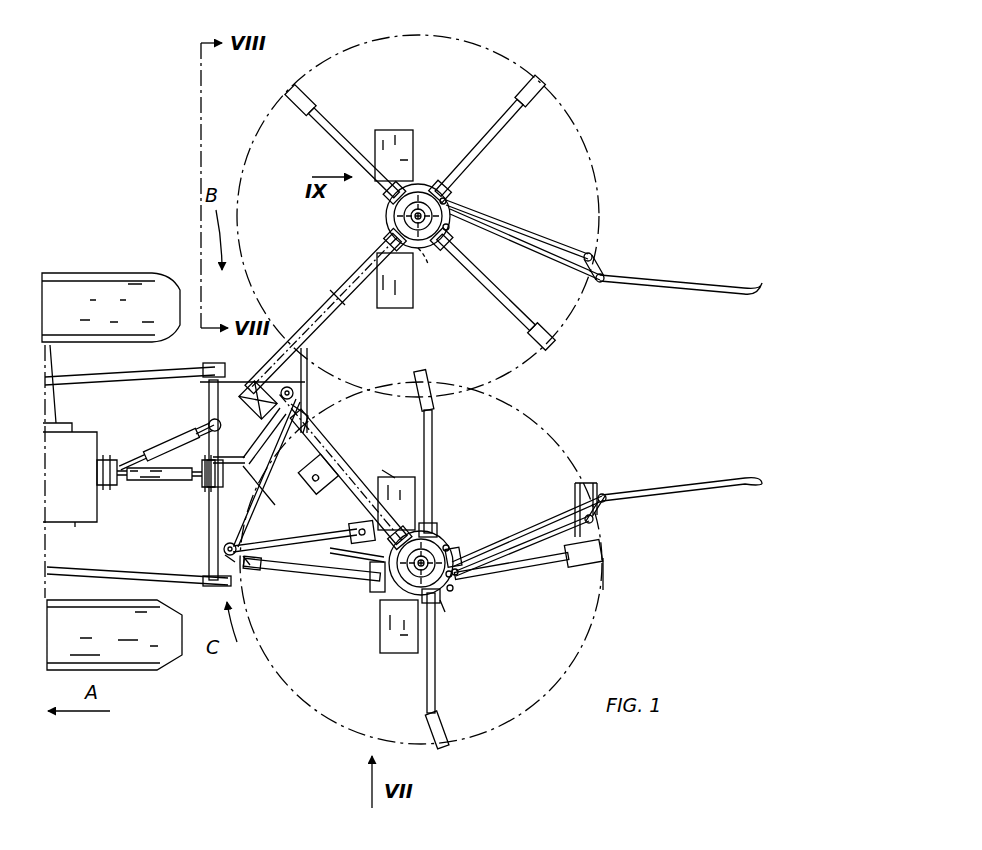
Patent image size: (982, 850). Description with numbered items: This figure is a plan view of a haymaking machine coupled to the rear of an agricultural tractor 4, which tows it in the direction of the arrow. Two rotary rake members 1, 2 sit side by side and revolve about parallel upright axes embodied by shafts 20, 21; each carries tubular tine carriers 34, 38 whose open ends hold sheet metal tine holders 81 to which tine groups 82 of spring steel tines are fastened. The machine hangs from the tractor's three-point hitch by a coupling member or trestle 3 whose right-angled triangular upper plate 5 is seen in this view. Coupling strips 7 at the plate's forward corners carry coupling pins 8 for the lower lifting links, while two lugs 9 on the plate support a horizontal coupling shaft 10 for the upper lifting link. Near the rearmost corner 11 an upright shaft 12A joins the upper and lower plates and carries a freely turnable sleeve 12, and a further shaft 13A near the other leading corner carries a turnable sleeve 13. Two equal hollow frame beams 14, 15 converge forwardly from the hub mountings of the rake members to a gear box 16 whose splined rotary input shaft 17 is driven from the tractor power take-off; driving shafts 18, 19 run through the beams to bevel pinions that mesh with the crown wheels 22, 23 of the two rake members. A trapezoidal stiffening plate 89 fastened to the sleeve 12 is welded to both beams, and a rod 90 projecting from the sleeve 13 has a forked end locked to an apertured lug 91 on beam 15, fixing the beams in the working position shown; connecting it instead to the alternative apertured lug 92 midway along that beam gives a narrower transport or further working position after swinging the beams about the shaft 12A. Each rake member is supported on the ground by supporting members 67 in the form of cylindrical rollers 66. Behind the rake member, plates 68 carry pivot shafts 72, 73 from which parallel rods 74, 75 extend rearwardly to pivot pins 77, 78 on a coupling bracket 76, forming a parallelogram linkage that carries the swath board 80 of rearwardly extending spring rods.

The rake member 1 is at (497, 46).
The rake member 2 is at (313, 713).
The coupling member or trestle 3 is at (205, 518).
The agricultural tractor 4 is at (86, 270).
The upper plate 5 is at (277, 478).
The coupling strips 7 is at (225, 378).
The coupling pins 8 is at (205, 366).
The lugs 9 is at (242, 462).
The coupling shaft 10 is at (205, 487).
The rearmost corner 11 is at (310, 380).
The sleeve 12 is at (306, 393).
The shaft 12A is at (298, 358).
The sleeve 13 is at (224, 548).
The further shaft 13A is at (230, 553).
The hollow frame beam 14 is at (352, 266).
The hollow frame beam 15 is at (358, 472).
The gear box 16 is at (208, 400).
The rotary input shaft 17 is at (208, 418).
The driving shaft 18 is at (342, 280).
The driving shaft 19 is at (384, 476).
The shaft 20 is at (388, 214).
The shaft 21 is at (440, 560).
The crown wheel or bevel pinion 22 is at (428, 250).
The crown wheel or bevel pinion 23 is at (378, 584).
The tubular tine carrier 34 is at (343, 142).
The tubular tine carrier 38 is at (500, 120).
The cylindrical roller 66 is at (405, 158).
The supporting member 67 is at (386, 129).
The upper plate 68 is at (452, 591).
The pivot shaft 72 is at (454, 616).
The pivot shaft 73 is at (458, 572).
The rod 74 is at (560, 236).
The rod 75 is at (578, 262).
The coupling bracket 76 is at (600, 263).
The pivot pin 77 is at (594, 524).
The pivot pin 78 is at (604, 494).
The swath board 80 is at (700, 287).
The tine holder 81 is at (540, 78).
The tine group 82 is at (527, 130).
The stiffening plate 89 is at (308, 424).
The rod 90 is at (280, 500).
The apertured lug 91 is at (368, 547).
The alternative apertured lug 92 is at (345, 526).